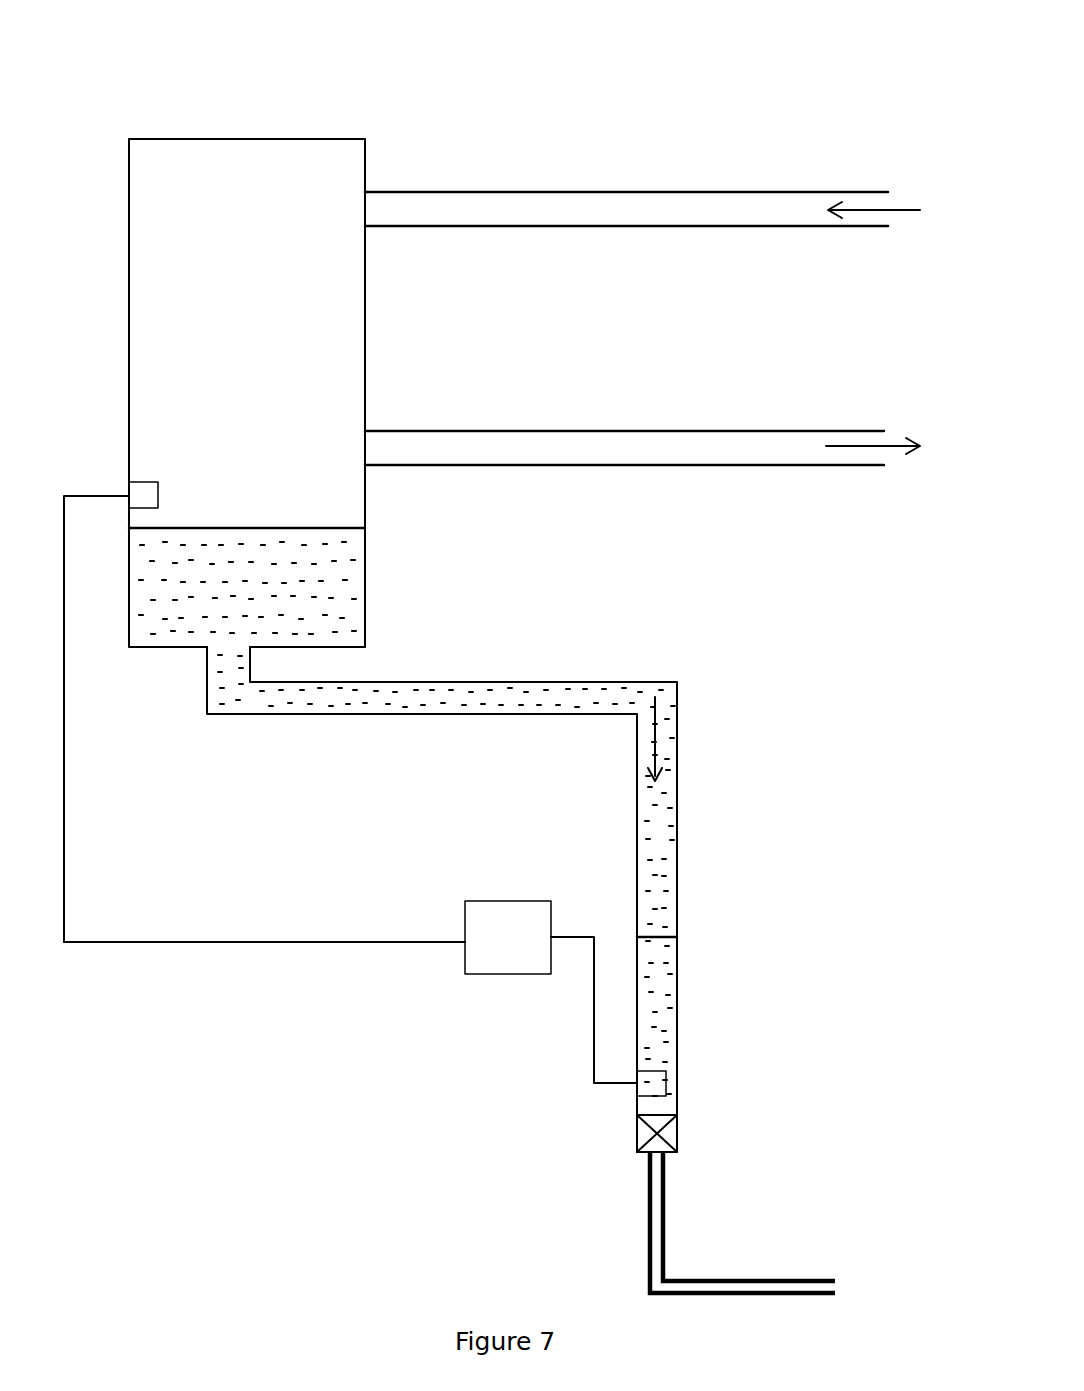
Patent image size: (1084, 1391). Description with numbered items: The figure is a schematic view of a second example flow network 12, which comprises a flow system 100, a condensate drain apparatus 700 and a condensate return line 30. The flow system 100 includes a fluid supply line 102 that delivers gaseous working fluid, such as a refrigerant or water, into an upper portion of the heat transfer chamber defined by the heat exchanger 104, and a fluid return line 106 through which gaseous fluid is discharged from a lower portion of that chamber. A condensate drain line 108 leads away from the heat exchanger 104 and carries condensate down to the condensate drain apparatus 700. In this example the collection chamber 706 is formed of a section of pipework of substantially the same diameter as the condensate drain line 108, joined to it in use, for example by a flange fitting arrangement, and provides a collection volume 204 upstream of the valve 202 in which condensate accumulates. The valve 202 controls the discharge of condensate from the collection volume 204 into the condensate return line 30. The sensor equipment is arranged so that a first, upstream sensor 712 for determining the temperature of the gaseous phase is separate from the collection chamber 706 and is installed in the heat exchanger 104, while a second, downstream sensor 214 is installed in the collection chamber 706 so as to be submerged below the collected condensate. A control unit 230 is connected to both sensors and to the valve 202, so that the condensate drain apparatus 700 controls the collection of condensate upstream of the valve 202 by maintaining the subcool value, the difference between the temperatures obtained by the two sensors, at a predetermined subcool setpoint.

The flow network 12 is at (291, 31).
The flow system 100 is at (598, 157).
The fluid supply line 102 is at (680, 225).
The fluid return line 106 is at (733, 466).
The first sensor 712 is at (147, 496).
The heat exchanger 104 is at (160, 647).
The condensate drain line 108 is at (637, 843).
The collection volume 204 is at (667, 992).
The collection chamber 706 is at (678, 1020).
The condensate drain apparatus 700 is at (740, 1050).
The controller 230 is at (465, 945).
The second sensor 214 is at (637, 1092).
The valve 202 is at (637, 1135).
The condensate return line 30 is at (660, 1237).